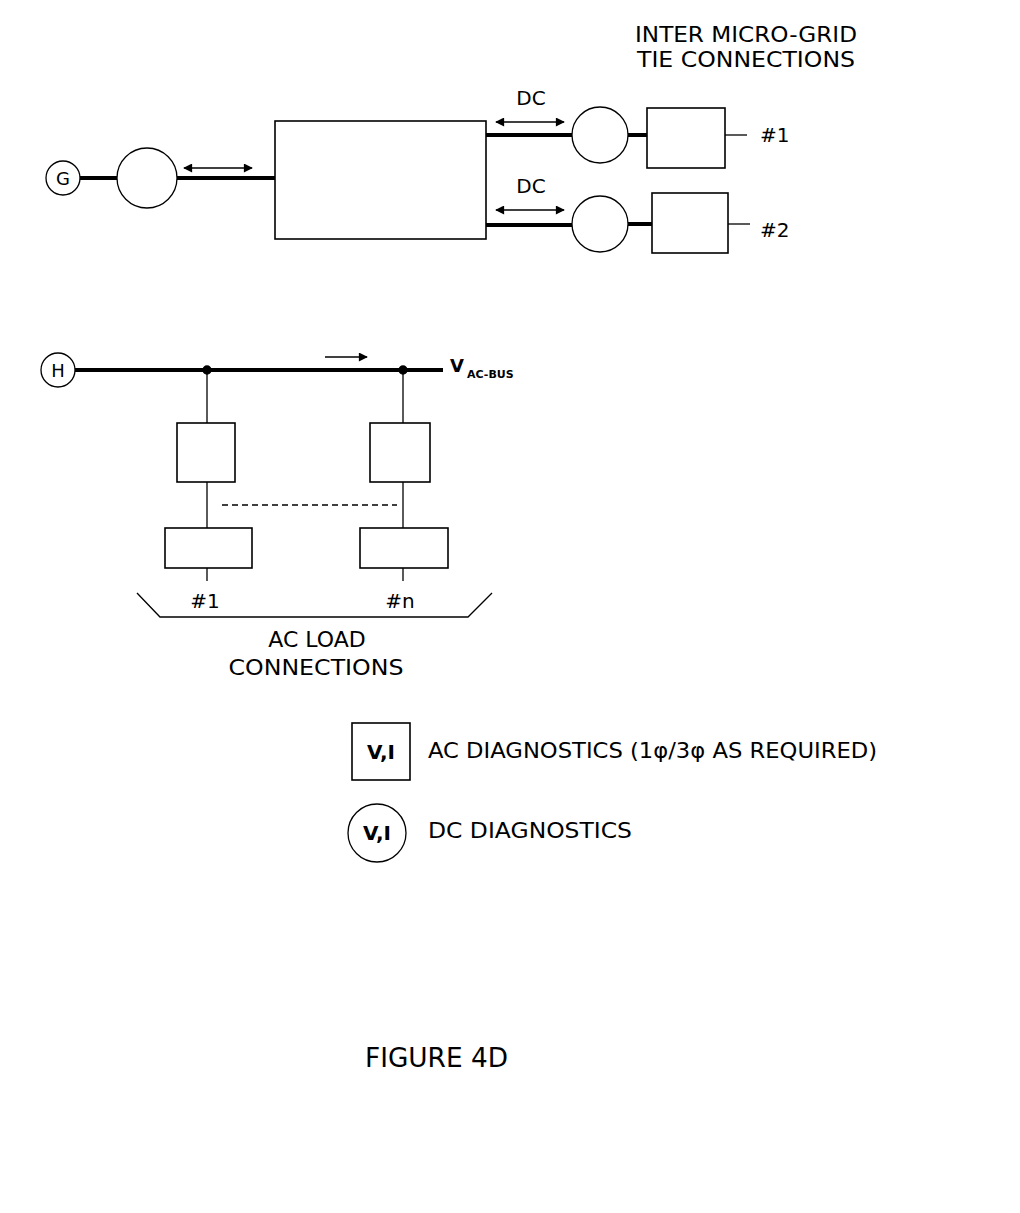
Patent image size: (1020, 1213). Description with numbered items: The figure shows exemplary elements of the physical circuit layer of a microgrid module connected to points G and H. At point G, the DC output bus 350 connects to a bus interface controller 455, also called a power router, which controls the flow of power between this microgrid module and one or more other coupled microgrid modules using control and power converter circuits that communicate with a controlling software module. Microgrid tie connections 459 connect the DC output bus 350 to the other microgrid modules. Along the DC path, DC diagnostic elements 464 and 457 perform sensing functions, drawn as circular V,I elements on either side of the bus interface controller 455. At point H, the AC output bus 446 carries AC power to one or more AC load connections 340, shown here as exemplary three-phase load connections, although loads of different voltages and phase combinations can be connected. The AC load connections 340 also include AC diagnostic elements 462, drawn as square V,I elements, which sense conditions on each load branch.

The AC load connections 340 is at (349, 548).
The DC output bus 350 is at (226, 134).
The AC output bus 446 is at (259, 335).
The bus interface controller 455 is at (380, 161).
The DC diagnostic element 457 is at (600, 165).
The microgrid tie connections 459 is at (687, 165).
The AC diagnostics (V,I) 462 is at (344, 452).
The DC diagnostic element 464 is at (145, 195).